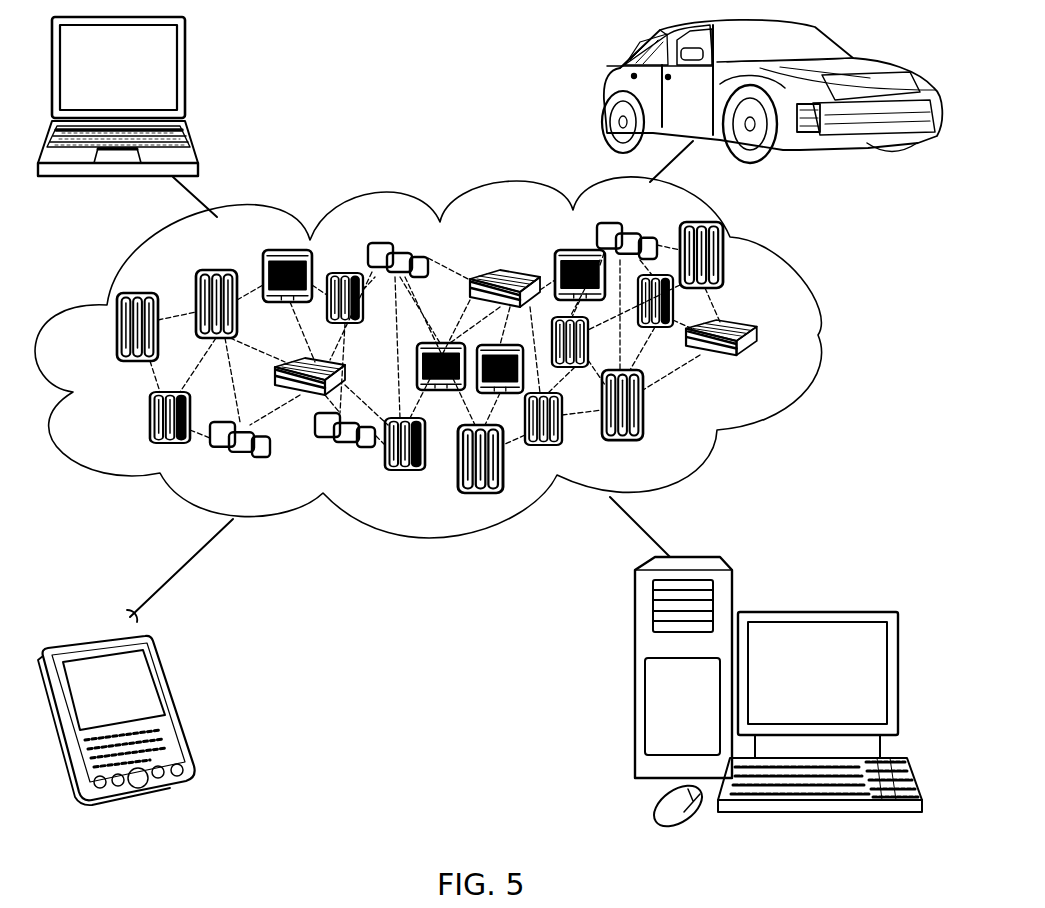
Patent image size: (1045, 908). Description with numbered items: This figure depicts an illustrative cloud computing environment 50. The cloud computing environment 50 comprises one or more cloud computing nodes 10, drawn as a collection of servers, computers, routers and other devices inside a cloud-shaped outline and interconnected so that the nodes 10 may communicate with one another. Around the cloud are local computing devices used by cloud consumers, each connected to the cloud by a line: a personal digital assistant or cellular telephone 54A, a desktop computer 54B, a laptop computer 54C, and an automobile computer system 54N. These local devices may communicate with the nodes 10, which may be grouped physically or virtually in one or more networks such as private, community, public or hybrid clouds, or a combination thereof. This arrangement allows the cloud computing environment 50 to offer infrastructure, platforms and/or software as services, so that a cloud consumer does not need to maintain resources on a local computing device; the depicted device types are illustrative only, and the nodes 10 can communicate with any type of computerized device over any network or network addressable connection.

The cloud computing node 10 is at (770, 371).
The cloud computing environment 50 is at (818, 335).
The personal digital assistant or cellular telephone 54A is at (170, 703).
The desktop computer 54B is at (815, 611).
The laptop computer 54C is at (187, 77).
The automobile computer system 54N is at (605, 97).